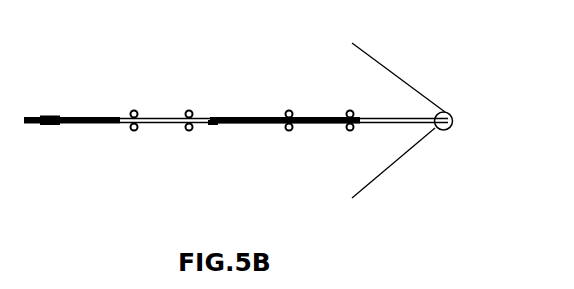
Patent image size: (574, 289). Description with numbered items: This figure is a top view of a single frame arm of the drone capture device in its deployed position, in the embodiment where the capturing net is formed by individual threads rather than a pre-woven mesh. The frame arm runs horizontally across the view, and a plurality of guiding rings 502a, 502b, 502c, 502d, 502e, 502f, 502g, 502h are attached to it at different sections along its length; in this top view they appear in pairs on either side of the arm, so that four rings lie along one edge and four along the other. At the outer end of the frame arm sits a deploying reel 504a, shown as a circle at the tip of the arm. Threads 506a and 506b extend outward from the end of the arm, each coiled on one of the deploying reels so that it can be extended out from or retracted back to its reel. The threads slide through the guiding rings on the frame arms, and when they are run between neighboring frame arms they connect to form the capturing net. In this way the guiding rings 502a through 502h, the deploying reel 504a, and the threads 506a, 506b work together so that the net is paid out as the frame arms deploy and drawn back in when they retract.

The guiding ring 502a is at (350, 131).
The guiding ring 502b is at (289, 131).
The guiding ring 502c is at (189, 131).
The guiding ring 502d is at (134, 131).
The guiding ring 502e is at (350, 110).
The guiding ring 502f is at (289, 110).
The guiding ring 502g is at (189, 110).
The guiding ring 502h is at (134, 110).
The deploying reel 504a is at (446, 112).
The thread 506a is at (382, 63).
The thread 506b is at (395, 167).